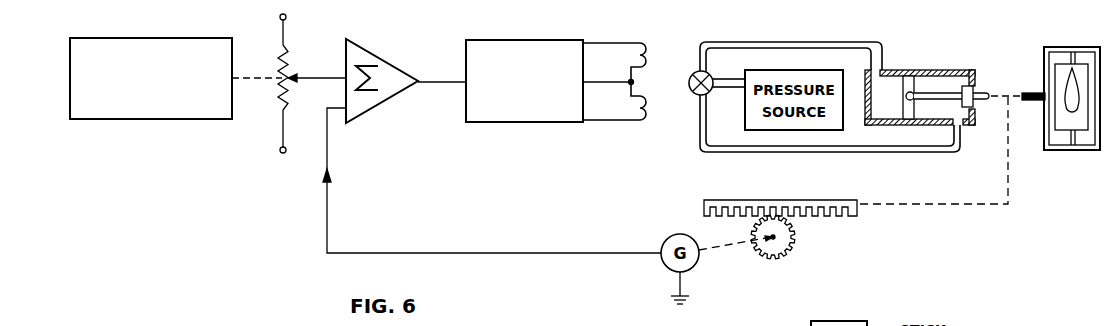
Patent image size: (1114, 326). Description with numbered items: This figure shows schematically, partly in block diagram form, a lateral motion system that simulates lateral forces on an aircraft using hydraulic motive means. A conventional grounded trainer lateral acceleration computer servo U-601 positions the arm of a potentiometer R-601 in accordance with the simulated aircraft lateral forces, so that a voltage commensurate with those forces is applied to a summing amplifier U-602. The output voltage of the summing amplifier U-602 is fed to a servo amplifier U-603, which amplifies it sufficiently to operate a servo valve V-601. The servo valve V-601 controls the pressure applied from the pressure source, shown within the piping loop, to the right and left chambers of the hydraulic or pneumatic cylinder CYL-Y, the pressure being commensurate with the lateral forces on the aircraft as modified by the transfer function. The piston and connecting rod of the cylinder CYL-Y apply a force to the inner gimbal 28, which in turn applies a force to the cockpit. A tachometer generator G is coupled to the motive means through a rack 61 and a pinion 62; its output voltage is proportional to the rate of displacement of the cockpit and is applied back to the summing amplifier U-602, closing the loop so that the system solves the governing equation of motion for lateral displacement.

The trainer lateral acceleration servo U-601 is at (105, 119).
The potentiometer R-601 is at (289, 48).
The summing amplifier U-602 is at (375, 53).
The servo amplifier U-603 is at (524, 81).
The servo valve V-601 is at (693, 71).
The hydraulic or pneumatic cylinder CYL-Y is at (913, 70).
The inner gimbal 28 is at (1044, 80).
The rack 61 is at (808, 213).
The pinion 62 is at (781, 247).